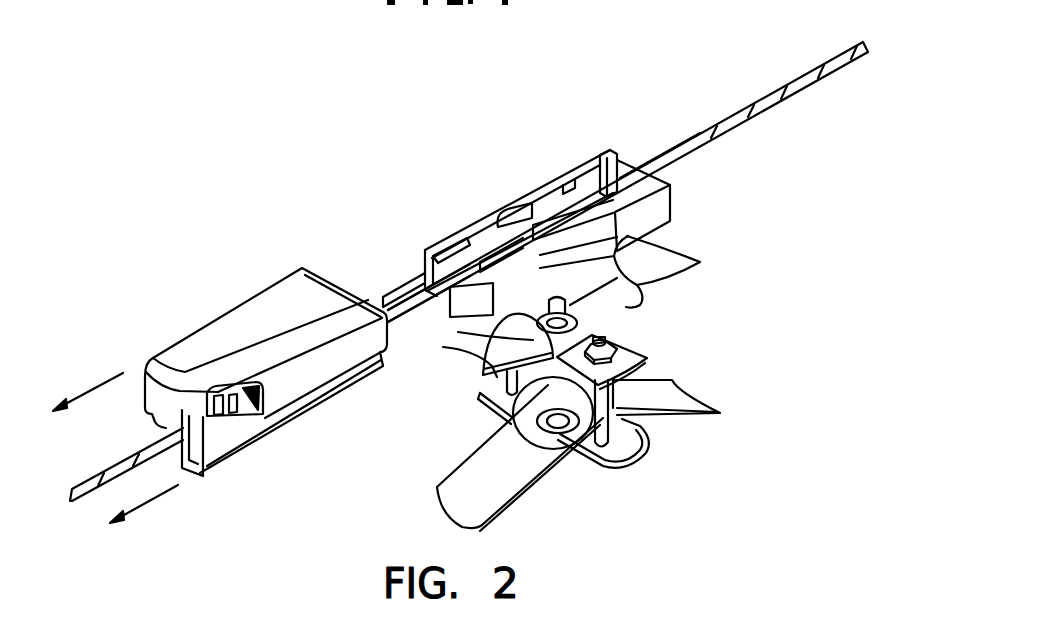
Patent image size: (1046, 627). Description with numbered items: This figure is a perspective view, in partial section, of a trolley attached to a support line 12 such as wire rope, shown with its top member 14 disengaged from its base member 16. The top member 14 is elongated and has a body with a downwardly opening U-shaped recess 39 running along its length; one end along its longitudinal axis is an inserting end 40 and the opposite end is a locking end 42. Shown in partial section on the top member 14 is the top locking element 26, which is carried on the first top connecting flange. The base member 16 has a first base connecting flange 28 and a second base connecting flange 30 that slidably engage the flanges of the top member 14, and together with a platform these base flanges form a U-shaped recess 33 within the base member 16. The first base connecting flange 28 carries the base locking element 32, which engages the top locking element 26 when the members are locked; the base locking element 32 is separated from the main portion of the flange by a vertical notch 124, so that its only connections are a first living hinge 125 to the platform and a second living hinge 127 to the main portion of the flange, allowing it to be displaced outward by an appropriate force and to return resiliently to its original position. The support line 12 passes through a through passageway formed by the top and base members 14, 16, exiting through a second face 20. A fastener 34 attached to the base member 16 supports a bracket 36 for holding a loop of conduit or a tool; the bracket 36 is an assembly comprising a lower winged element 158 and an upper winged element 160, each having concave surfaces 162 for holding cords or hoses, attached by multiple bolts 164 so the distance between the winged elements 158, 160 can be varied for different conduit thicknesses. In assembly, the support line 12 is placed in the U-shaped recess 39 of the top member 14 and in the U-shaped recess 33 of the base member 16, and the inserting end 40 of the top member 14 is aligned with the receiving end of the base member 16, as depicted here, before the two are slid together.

The support line 12 is at (804, 70).
The top member 14 is at (217, 314).
The base member 16 is at (507, 196).
The second face 20 is at (604, 152).
The top locking element 26 is at (230, 442).
The first base connecting flange 28 is at (408, 297).
The second base connecting flange 30 is at (417, 267).
The base locking element 32 is at (510, 374).
The U-shaped recess 33 is at (636, 156).
The fastener 34 is at (604, 340).
The bracket 36 is at (525, 491).
The U-shaped recess 39 is at (160, 428).
The inserting end 40 is at (303, 271).
The locking end 42 is at (132, 388).
The vertical notch 124 is at (620, 248).
The first living hinge 125 is at (458, 332).
The second living hinge 127 is at (546, 303).
The lower winged element 158 is at (702, 414).
The upper winged element 160 is at (704, 265).
The concave surfaces 162 is at (693, 403).
The bolts 164 is at (606, 445).